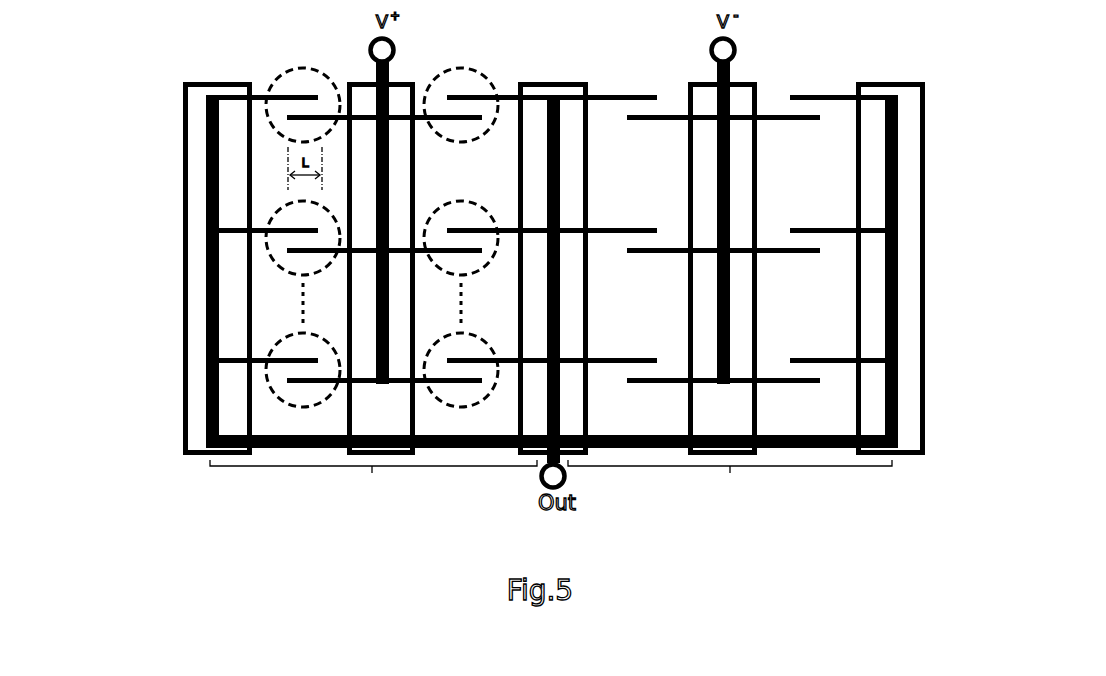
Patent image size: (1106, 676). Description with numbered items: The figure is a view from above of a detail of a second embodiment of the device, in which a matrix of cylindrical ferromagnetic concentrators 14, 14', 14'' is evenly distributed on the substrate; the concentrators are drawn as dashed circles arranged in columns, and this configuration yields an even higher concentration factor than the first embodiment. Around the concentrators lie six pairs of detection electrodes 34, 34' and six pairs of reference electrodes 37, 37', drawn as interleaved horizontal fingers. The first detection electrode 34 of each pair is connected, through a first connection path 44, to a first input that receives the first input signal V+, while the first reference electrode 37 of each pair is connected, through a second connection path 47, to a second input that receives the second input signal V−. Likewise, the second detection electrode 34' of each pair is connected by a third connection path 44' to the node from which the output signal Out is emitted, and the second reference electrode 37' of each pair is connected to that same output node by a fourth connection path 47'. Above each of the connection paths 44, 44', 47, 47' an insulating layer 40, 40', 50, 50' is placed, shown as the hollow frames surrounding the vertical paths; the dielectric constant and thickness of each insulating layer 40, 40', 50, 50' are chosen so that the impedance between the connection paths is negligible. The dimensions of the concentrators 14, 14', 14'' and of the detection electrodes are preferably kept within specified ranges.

The ferromagnetic concentrator 14 is at (474, 77).
The ferromagnetic concentrator 14' is at (475, 423).
The ferromagnetic concentrator 14'' is at (301, 421).
The first detection electrode 34 is at (384, 66).
The second detection electrode 34' is at (268, 56).
The first reference electrode 37 is at (723, 72).
The second reference electrode 37' is at (838, 60).
The insulating layer 40 is at (399, 242).
The insulating layer 40' is at (168, 269).
The first connection path 44 is at (389, 223).
The third connection path 44' is at (217, 271).
The second connection path 47 is at (716, 223).
The fourth connection path 47' is at (901, 271).
The insulating layer 50 is at (735, 239).
The insulating layer 50' is at (940, 269).